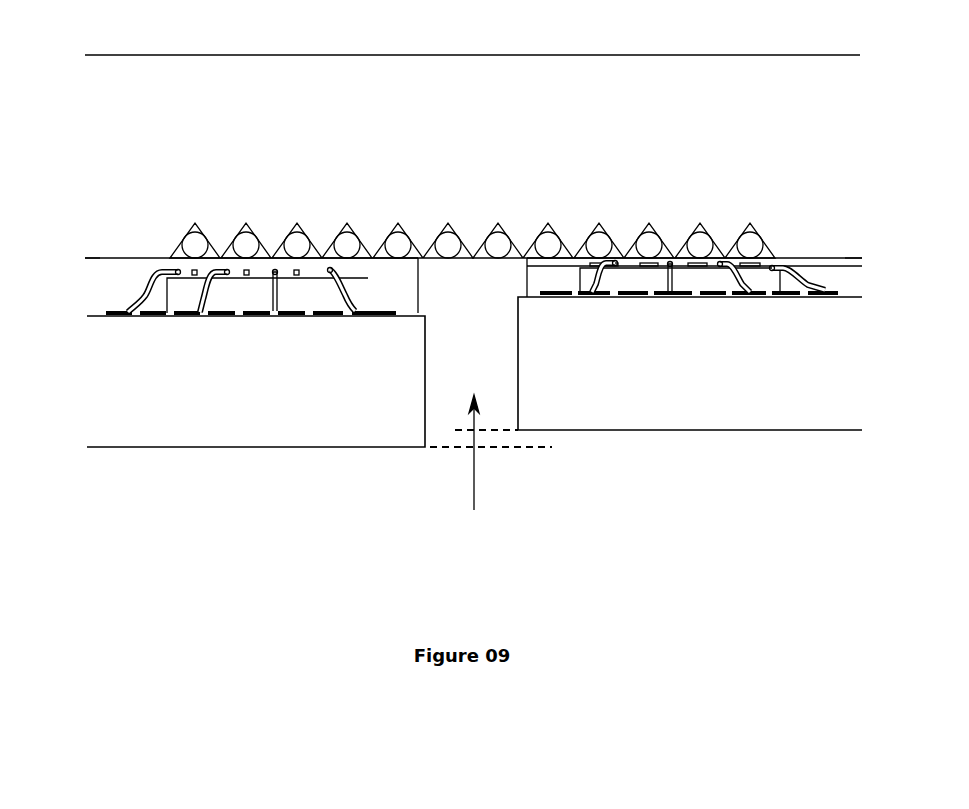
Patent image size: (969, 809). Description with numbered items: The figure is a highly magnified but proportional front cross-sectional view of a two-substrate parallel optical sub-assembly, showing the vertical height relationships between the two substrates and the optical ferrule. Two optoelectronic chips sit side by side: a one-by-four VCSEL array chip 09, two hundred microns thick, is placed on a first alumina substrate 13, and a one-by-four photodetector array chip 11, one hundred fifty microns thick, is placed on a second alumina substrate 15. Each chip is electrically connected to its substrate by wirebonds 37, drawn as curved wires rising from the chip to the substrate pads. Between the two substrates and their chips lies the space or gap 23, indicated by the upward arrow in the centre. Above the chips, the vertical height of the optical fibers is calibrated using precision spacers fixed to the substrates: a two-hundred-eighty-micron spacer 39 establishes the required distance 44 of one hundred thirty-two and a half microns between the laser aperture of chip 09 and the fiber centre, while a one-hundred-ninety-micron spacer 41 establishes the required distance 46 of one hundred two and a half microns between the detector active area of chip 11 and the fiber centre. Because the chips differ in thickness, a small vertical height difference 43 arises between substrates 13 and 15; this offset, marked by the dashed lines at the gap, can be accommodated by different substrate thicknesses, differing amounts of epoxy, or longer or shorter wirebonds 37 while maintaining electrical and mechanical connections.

The optoelectronic chip 09 is at (195, 297).
The optoelectronic chip 11 is at (762, 283).
The alumina substrate 13 is at (175, 412).
The alumina substrate 15 is at (753, 407).
The space 23 is at (472, 467).
The wirebonds 37 is at (147, 292).
The precision spacer 39 is at (418, 285).
The precision spacer 41 is at (526, 285).
The vertical height difference 43 is at (497, 440).
The distance 44 is at (61, 248).
The distance 46 is at (877, 241).